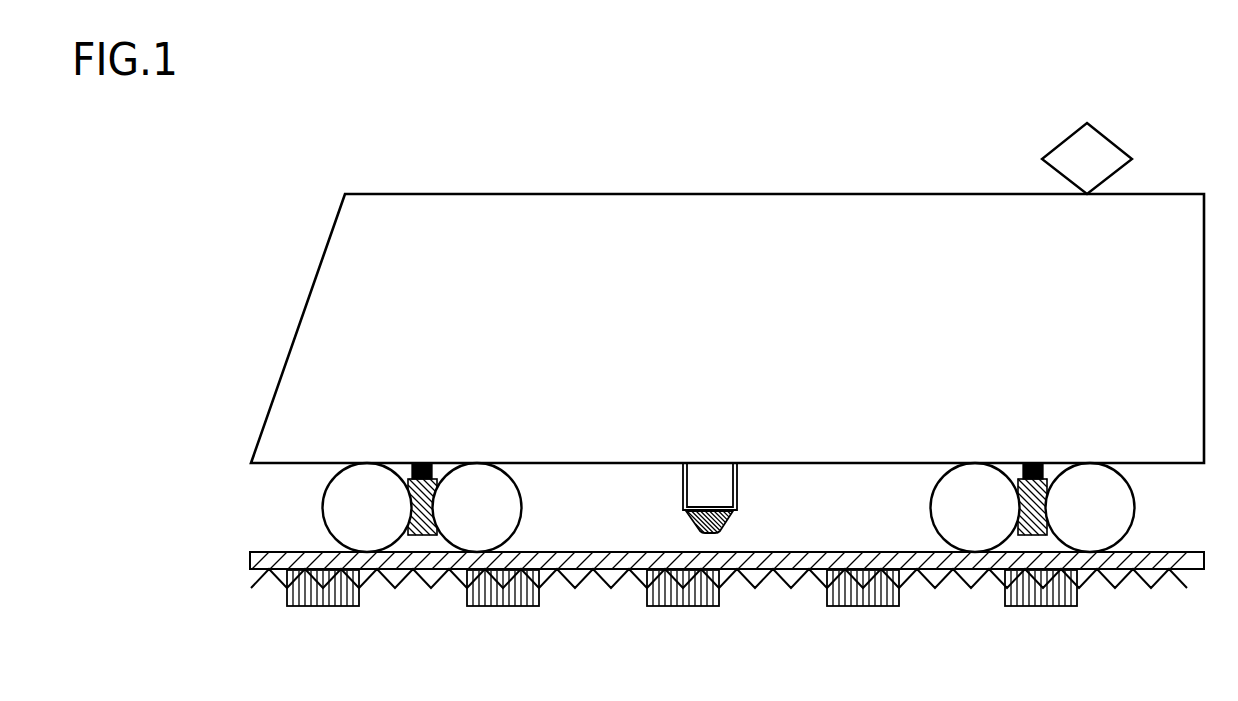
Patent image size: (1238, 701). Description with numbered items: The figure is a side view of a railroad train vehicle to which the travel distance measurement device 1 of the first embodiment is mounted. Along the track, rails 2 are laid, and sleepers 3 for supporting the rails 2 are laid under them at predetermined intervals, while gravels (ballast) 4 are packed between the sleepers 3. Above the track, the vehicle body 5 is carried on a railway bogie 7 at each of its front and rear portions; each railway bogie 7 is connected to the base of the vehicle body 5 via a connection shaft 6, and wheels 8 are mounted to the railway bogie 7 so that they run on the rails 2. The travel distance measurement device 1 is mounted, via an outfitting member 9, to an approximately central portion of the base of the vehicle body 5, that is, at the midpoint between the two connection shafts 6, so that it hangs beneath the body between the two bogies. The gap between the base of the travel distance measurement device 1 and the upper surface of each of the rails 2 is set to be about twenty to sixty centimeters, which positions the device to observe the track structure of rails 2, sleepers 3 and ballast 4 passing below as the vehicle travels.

The travel distance measurement device 1 is at (730, 516).
The rails 2 is at (268, 551).
The sleepers 3 is at (503, 608).
The gravels (ballast) 4 is at (397, 588).
The vehicle body 5 is at (481, 193).
The connection shaft 6 is at (422, 465).
The railway bogie 7 is at (437, 481).
The wheels 8 is at (372, 472).
The outfitting member 9 is at (738, 488).